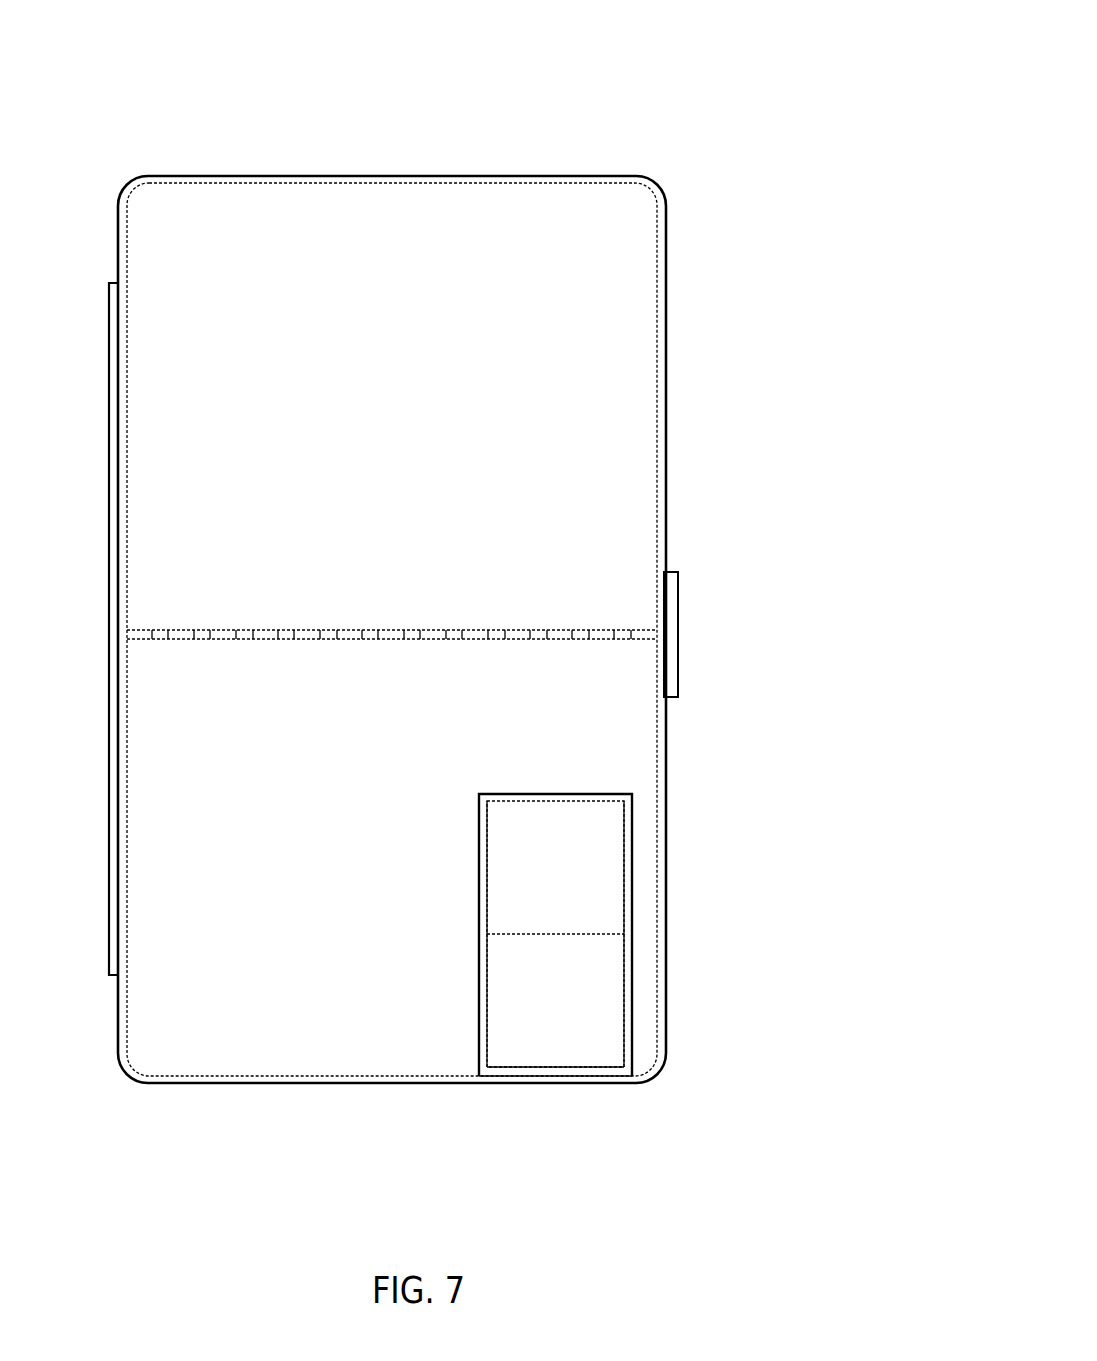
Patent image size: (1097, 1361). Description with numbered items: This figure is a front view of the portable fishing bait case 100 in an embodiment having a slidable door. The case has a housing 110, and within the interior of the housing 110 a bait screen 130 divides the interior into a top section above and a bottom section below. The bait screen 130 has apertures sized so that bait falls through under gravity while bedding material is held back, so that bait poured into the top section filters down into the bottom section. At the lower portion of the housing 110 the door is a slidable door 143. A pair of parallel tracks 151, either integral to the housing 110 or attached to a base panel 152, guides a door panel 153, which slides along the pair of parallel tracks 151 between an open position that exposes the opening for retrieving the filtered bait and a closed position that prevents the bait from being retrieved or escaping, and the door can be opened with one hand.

The portable fishing bait case 100 is at (652, 82).
The housing 110 is at (293, 217).
The bait screen 130 is at (552, 629).
The slidable door 143 is at (608, 816).
The pair of parallel tracks 151 is at (632, 893).
The base panel 152 is at (519, 1071).
The door panel 153 is at (582, 1023).